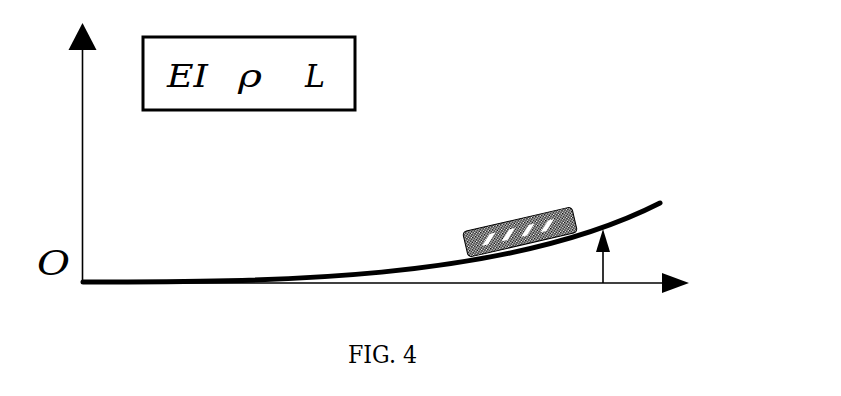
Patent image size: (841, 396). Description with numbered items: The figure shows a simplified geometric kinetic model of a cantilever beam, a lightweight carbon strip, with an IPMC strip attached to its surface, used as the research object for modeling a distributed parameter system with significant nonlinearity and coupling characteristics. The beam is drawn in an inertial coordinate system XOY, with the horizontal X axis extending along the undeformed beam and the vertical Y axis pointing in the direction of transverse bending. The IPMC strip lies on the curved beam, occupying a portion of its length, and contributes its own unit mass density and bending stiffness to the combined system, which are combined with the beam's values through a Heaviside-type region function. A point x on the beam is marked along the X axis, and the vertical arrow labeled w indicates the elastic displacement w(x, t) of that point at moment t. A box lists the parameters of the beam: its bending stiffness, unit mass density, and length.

The IPMC strip IPMC is at (463, 228).
The X axis X is at (410, 292).
The Y axis Y is at (70, 153).
The elastic displacement w is at (658, 249).
The point x on the cantilever beam x is at (609, 288).